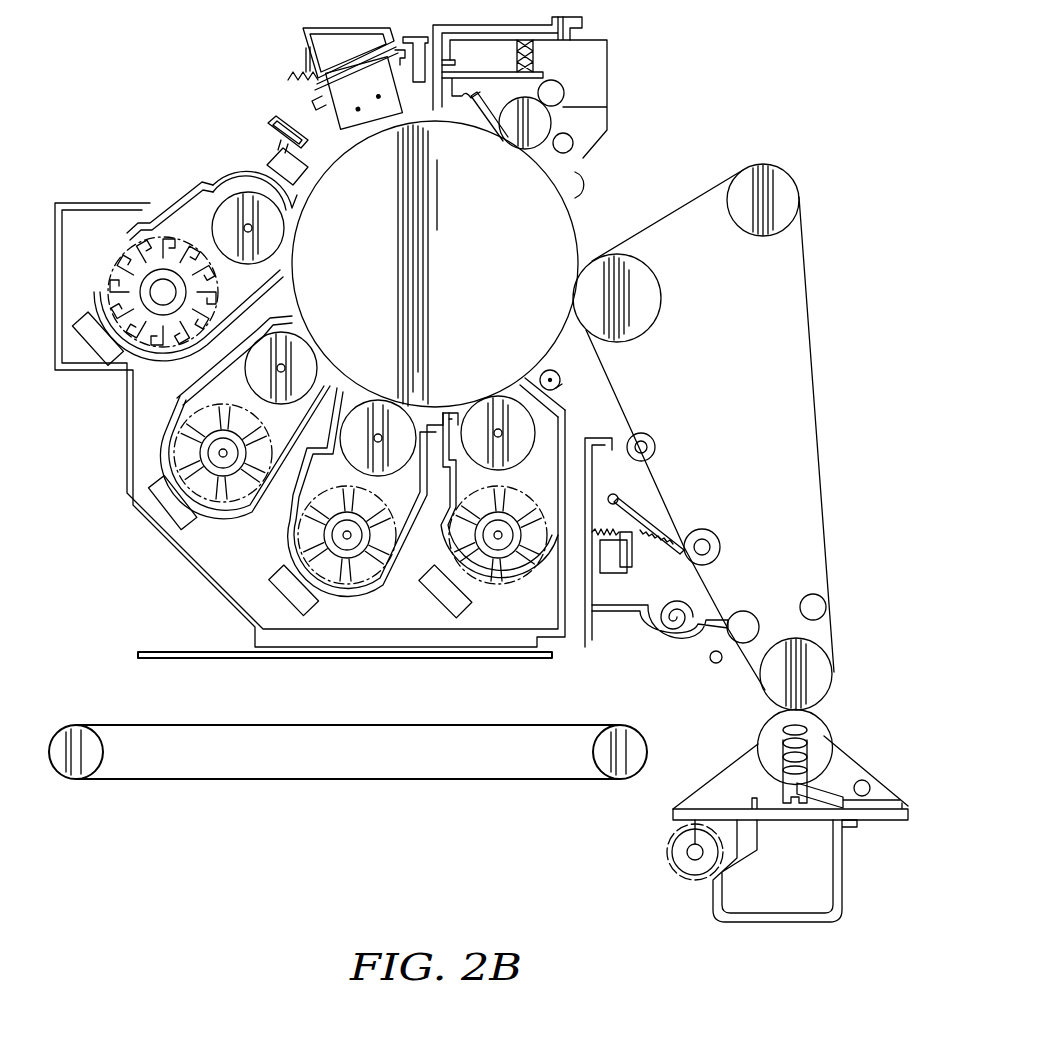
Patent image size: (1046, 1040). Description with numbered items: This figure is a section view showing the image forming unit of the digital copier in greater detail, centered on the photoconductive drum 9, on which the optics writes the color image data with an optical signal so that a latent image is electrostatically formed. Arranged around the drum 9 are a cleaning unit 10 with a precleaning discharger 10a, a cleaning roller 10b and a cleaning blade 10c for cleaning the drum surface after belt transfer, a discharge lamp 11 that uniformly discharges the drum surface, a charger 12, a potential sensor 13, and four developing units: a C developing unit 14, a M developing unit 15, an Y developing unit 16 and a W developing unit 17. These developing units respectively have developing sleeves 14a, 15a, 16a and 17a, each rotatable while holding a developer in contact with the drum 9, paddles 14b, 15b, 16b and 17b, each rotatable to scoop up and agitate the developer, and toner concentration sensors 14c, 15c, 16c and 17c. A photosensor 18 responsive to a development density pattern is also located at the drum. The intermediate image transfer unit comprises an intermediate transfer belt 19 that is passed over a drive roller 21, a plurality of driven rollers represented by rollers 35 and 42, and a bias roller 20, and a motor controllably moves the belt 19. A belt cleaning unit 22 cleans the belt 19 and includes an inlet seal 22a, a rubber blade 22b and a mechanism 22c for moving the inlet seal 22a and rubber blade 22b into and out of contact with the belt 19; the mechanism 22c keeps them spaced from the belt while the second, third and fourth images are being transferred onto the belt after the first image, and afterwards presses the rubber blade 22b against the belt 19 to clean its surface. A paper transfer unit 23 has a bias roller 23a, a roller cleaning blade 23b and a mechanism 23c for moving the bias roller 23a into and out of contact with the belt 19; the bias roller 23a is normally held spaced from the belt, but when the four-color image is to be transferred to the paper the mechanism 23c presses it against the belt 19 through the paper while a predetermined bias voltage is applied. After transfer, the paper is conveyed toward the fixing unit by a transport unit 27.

The photoconductive drum 9 is at (577, 240).
The cleaning unit 10 is at (608, 76).
The precleaning discharger 10a is at (597, 172).
The cleaning roller 10b is at (525, 140).
The cleaning blade 10c is at (488, 124).
The discharge lamp 11 is at (420, 84).
The charger 12 is at (369, 128).
The potential sensor 13 is at (266, 144).
The C developing unit 14 is at (106, 266).
The developing sleeve 14a is at (285, 228).
The paddle 14b is at (170, 236).
The toner concentration sensor 14c is at (98, 356).
The M developing unit 15 is at (515, 582).
The developing sleeve 15a is at (492, 398).
The paddle 15b is at (497, 582).
The toner concentration sensor 15c is at (440, 603).
The Y developing unit 16 is at (292, 552).
The developing sleeve 16a is at (383, 400).
The paddle 16b is at (314, 536).
The toner concentration sensor 16c is at (280, 602).
The W developing unit 17 is at (162, 470).
The developing sleeve 17a is at (303, 338).
The paddle 17b is at (182, 460).
The toner concentration sensor 17c is at (160, 508).
The photosensor 18 is at (561, 377).
The intermediate transfer belt 19 is at (818, 406).
The bias roller 20 is at (662, 305).
The drive roller 21 is at (772, 690).
The belt cleaning unit 22 is at (579, 652).
The inlet seal 22a is at (712, 615).
The rubber blade 22b is at (668, 532).
The mechanism 22c is at (615, 574).
The paper transfer unit 23 is at (878, 846).
The bias roller 23a is at (826, 725).
The roller cleaning blade 23b is at (830, 786).
The mechanism 23c is at (683, 878).
The transport unit 27 is at (410, 780).
The driven roller 35 is at (748, 238).
The driven roller 42 is at (722, 546).